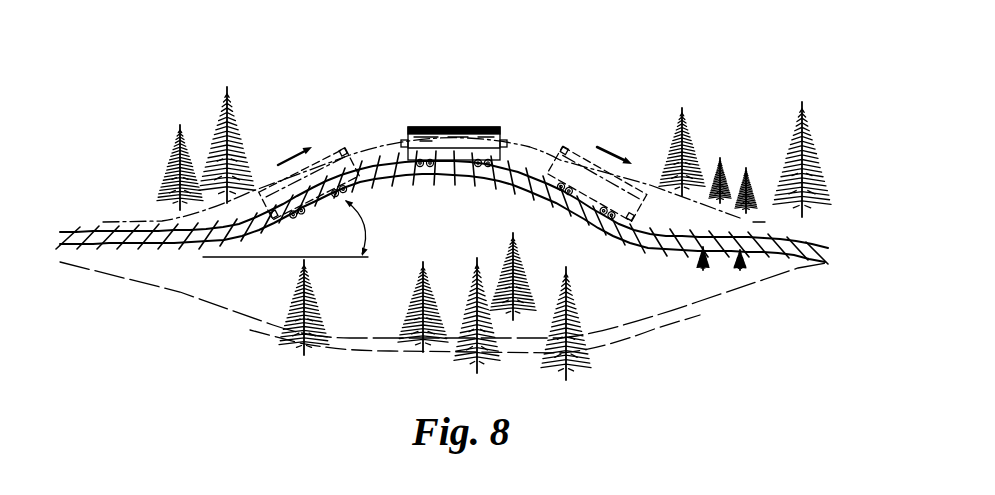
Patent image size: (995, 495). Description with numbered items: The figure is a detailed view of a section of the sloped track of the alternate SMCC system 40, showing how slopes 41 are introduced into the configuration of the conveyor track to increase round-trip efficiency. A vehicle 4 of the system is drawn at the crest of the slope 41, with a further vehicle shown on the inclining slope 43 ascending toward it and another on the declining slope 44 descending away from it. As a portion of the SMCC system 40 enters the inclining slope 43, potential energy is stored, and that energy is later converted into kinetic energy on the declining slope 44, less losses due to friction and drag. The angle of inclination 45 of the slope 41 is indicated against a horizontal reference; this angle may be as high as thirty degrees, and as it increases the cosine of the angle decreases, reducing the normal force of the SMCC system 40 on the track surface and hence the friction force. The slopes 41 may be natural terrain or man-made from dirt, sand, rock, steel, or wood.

The SMCC system 40 is at (443, 200).
The slope 41 is at (462, 168).
The transport vehicle 4 is at (447, 126).
The inclining slope 43 is at (380, 152).
The declining slope 44 is at (520, 153).
The angle of inclination 45 is at (363, 228).